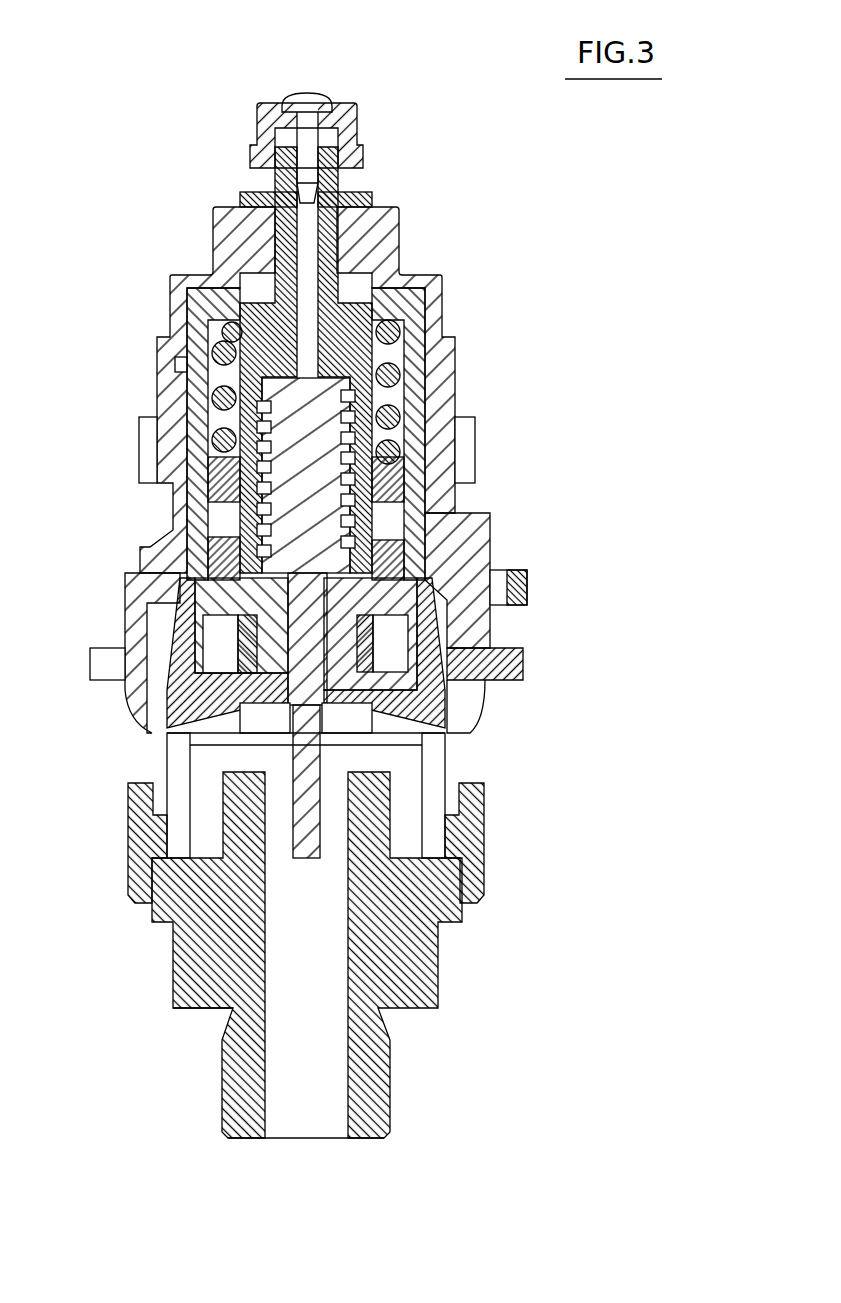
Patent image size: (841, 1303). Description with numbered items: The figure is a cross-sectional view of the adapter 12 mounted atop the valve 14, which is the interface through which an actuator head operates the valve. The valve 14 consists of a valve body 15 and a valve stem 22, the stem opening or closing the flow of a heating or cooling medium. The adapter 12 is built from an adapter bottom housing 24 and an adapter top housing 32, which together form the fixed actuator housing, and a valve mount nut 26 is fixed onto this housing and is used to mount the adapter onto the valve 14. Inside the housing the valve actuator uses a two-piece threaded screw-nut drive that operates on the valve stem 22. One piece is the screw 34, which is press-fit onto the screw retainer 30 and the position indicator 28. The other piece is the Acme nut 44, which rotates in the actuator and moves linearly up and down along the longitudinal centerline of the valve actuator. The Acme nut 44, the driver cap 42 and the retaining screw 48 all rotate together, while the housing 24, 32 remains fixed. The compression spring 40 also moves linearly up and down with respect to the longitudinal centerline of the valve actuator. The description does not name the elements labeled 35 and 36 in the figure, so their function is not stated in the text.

The adapter 12 is at (446, 299).
The valve 14 is at (444, 964).
The valve body 15 is at (193, 1010).
The valve stem 22 is at (273, 862).
The adapter bottom housing 24 is at (448, 770).
The valve mount nut 26 is at (486, 843).
The position indicator 28 is at (447, 738).
The screw retainer 30 is at (392, 612).
The adapter top housing 32 is at (488, 615).
The screw 34 is at (300, 468).
The cap 35 is at (358, 123).
The spring seat 36 is at (208, 488).
The compression spring 40 is at (200, 372).
The driver cap 42 is at (457, 377).
The Acme nut 44 is at (342, 185).
The retaining screw 48 is at (312, 92).